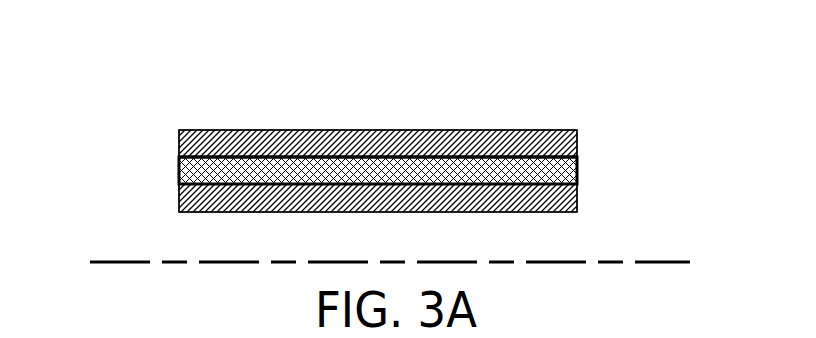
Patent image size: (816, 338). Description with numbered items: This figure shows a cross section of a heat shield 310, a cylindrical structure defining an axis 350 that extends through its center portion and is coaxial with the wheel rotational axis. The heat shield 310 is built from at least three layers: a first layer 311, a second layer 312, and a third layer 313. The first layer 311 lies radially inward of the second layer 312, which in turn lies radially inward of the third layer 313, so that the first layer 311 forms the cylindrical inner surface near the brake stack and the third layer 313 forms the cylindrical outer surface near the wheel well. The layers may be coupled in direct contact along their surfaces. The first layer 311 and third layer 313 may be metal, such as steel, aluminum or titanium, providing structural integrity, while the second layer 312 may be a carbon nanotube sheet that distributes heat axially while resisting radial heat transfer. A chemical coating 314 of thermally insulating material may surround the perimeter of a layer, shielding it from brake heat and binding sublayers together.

The heat shield 310 is at (149, 104).
The first layer 311 is at (577, 195).
The second layer 312 is at (577, 168).
The third layer 313 is at (577, 142).
The chemical coating 314 is at (503, 158).
The axis 350 is at (243, 262).